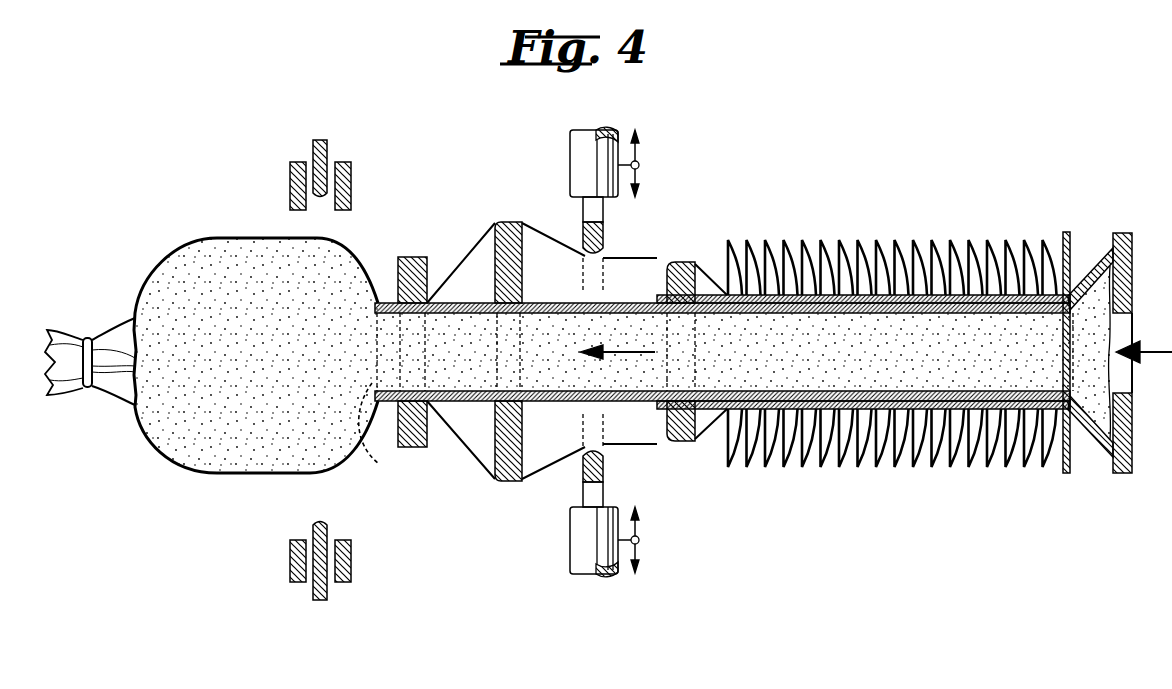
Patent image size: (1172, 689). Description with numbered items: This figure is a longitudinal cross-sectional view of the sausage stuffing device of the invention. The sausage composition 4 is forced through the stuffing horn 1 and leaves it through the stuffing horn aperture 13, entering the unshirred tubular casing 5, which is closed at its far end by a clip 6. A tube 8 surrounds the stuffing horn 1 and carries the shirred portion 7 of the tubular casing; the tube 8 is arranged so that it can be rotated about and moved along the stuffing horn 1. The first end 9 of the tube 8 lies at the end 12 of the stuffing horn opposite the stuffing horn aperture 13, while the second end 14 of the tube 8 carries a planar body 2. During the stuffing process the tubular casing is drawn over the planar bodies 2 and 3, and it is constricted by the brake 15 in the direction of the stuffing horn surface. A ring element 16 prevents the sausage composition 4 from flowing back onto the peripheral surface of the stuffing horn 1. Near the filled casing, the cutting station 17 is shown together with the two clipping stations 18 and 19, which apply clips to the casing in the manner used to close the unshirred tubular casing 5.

The stuffing horn 1 is at (560, 408).
The planar body 2 is at (676, 422).
The planar body 3 is at (497, 447).
The sausage composition 4 is at (207, 257).
The unshirred tubular casing 5 is at (367, 253).
The clip 6 is at (86, 338).
The shirred portion of the tubular casing 7 is at (929, 214).
The tube 8 is at (921, 392).
The first end of the tube 9 is at (1069, 262).
The end of the stuffing horn 12 is at (1090, 436).
The stuffing horn aperture 13 is at (378, 463).
The second end of the tube 14 is at (657, 297).
The brake 15 is at (577, 170).
The ring element 16 is at (413, 262).
The cutting station 17 is at (320, 143).
The clipping station 18 is at (352, 182).
The clipping station 19 is at (290, 185).